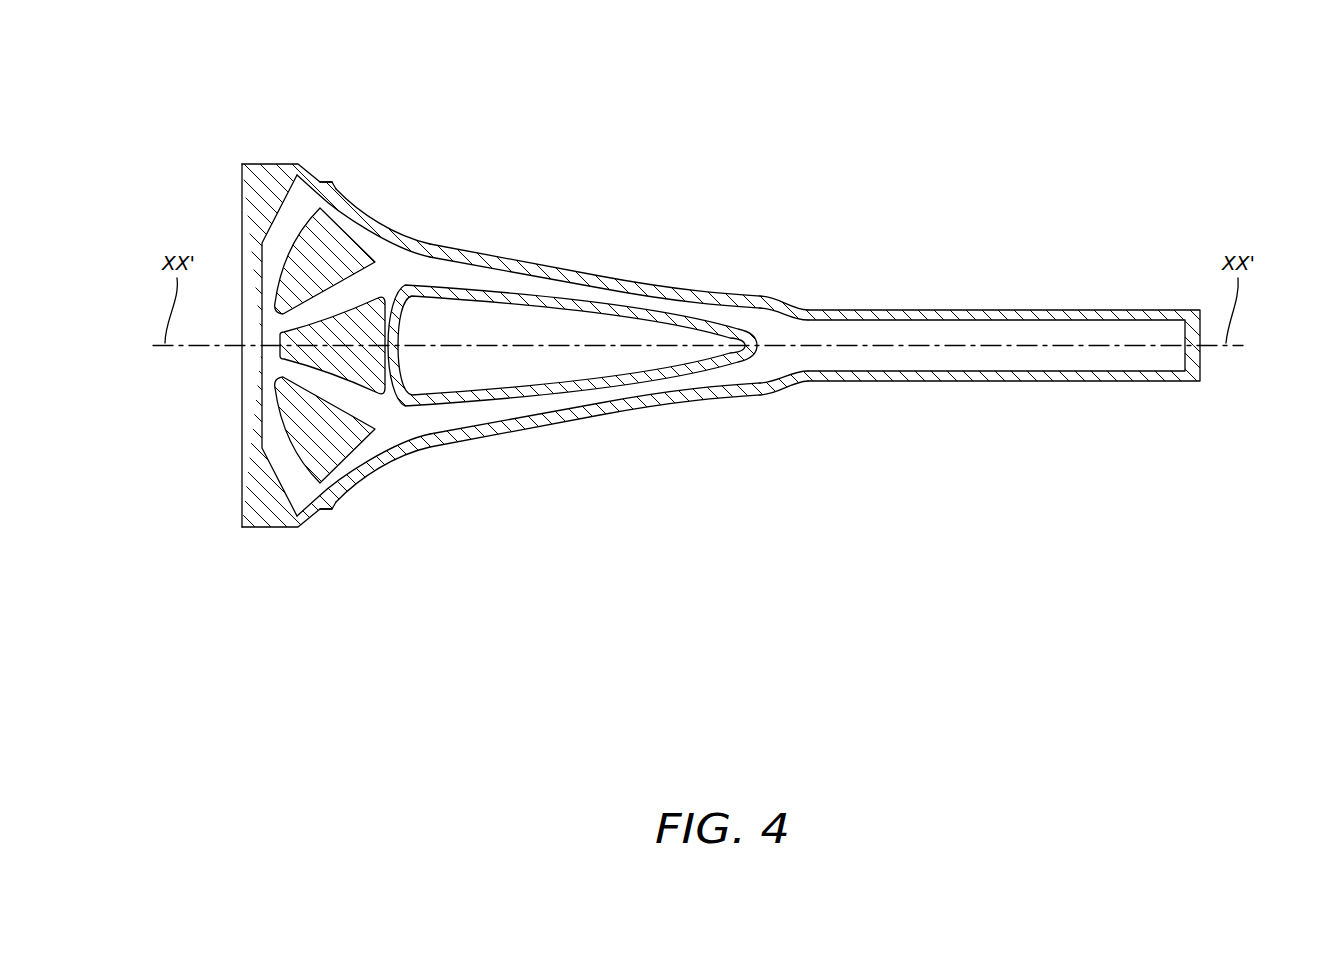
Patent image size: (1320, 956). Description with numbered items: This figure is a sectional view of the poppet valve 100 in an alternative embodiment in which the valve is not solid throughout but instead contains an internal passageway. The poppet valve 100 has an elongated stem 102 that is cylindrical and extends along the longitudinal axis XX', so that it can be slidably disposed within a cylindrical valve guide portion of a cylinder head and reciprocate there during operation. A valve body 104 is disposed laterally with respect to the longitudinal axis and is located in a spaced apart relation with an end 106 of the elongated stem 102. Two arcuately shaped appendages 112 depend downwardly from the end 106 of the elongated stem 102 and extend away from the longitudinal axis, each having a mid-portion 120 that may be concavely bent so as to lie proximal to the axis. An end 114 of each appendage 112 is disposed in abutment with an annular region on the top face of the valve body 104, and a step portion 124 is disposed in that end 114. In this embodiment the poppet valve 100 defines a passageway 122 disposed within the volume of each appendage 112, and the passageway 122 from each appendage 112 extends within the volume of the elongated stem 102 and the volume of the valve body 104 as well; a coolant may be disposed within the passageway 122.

The poppet valve 100 is at (1157, 70).
The elongated stem 102 is at (1093, 298).
The valve body 104 is at (260, 155).
The end of the elongated stem 106 is at (810, 308).
The arcuately shaped appendages 112 is at (511, 247).
The end of the appendage 114 is at (322, 513).
The mid-portion 120 is at (478, 244).
The passageway 122 is at (556, 290).
The step portion 124 is at (338, 188).